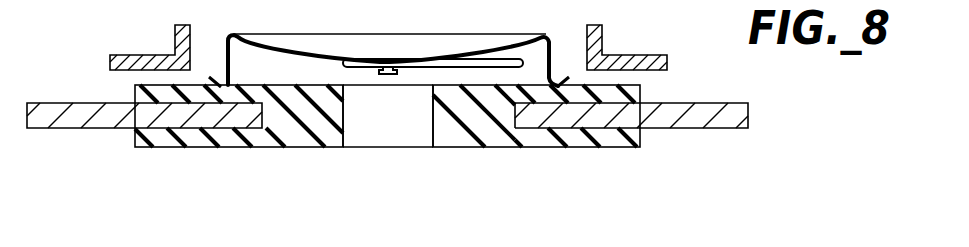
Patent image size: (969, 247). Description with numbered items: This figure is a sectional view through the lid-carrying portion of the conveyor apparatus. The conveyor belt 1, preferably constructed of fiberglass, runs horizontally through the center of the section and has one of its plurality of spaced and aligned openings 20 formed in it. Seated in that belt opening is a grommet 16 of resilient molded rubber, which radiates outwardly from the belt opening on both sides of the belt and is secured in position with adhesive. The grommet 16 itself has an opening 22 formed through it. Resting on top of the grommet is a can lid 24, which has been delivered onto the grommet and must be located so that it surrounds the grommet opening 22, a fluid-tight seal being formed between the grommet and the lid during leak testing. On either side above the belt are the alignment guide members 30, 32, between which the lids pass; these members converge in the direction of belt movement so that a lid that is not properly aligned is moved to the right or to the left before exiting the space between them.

The printed circuit board 1 is at (667, 129).
The grommet 16 is at (258, 149).
The opening 20 is at (514, 106).
The opening 22 is at (346, 108).
The can lid 24 is at (310, 43).
The alignment guide member 30 is at (173, 35).
The alignment guide member 32 is at (601, 34).